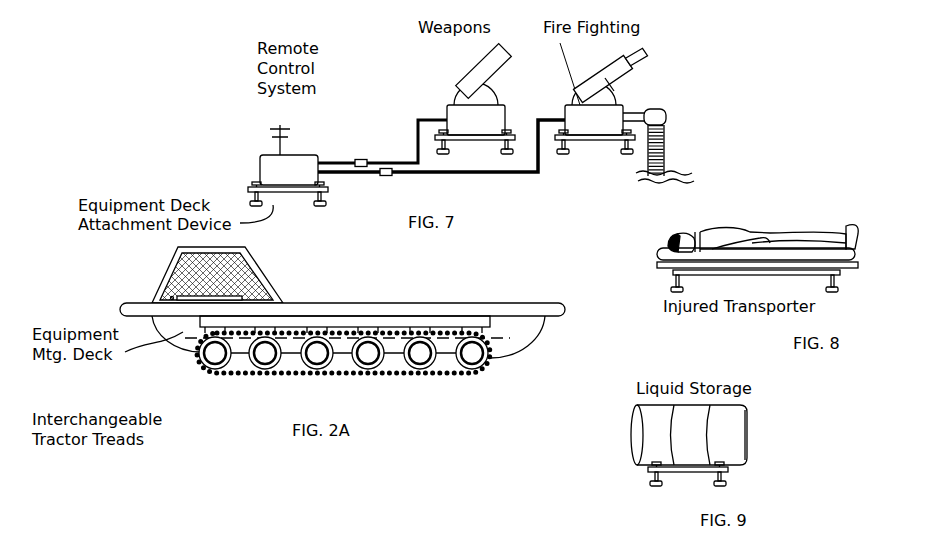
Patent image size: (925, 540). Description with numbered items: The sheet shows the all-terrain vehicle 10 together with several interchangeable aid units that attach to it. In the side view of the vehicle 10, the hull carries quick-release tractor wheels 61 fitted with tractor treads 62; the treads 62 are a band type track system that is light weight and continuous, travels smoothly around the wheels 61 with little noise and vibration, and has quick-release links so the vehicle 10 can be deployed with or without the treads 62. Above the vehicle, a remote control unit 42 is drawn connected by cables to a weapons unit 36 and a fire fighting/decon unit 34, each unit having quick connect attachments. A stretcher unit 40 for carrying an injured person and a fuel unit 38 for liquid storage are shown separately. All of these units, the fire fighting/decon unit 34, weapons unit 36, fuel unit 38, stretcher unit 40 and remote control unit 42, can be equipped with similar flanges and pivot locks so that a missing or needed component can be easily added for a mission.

In FIG. 2A, the all-terrain vehicle 10 is at (345, 282).
In FIG. 7, the fire fighting/decon unit 34 is at (632, 115).
In FIG. 7, the weapons unit 36 is at (452, 113).
In FIG. 9, the fuel unit 38 is at (657, 450).
In FIG. 8, the stretcher unit 40 is at (657, 262).
In FIG. 7, the remote control unit 42 is at (305, 153).
In FIG. 2A, the tractor wheels 61 is at (490, 368).
In FIG. 2A, the tractor treads 62 is at (398, 365).